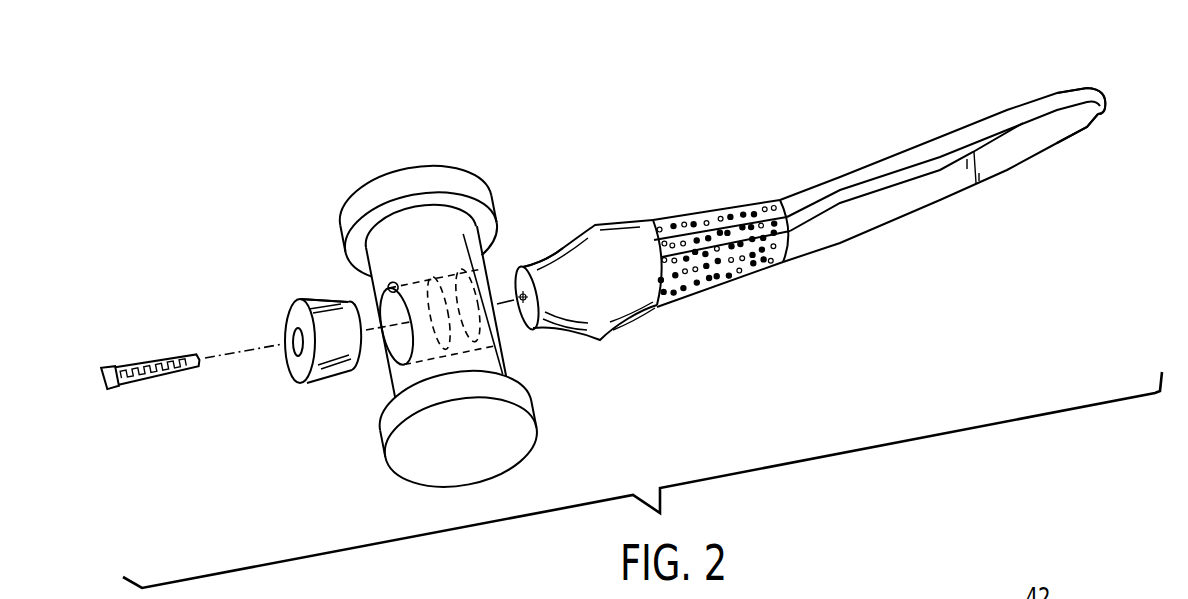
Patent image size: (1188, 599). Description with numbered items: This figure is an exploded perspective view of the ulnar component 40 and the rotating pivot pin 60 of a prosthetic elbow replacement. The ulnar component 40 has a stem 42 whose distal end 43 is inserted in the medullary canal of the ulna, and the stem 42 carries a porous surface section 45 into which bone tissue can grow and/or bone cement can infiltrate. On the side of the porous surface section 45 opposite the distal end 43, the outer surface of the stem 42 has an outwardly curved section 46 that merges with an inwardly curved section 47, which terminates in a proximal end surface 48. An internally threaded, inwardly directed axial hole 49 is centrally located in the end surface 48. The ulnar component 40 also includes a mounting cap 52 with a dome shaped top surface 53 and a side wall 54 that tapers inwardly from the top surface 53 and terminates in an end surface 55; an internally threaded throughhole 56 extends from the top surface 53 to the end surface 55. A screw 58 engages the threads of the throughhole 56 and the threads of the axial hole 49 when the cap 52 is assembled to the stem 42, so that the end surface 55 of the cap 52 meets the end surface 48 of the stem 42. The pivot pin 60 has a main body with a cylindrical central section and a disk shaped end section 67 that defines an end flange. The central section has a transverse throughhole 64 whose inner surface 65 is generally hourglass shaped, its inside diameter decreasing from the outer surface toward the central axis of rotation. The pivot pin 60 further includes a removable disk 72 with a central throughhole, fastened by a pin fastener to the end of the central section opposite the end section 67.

The ulnar component 40 is at (827, 236).
The stem 42 is at (962, 177).
The distal end 43 is at (1079, 118).
The porous surface section 45 is at (722, 278).
The outwardly curved section 46 is at (615, 222).
The inwardly curved section 47 is at (549, 258).
The proximal end surface 48 is at (522, 322).
The axial hole 49 is at (503, 312).
The mounting cap 52 is at (295, 341).
The top surface 53 is at (291, 357).
The side wall 54 is at (311, 300).
The end surface 55 is at (374, 365).
The throughhole 56 is at (292, 337).
The screw 58 is at (109, 390).
The pivot pin 60 is at (435, 303).
The transverse throughhole 64 is at (416, 285).
The inner surface 65 is at (391, 283).
The end section 67 is at (511, 449).
The removable disk 72 is at (421, 177).